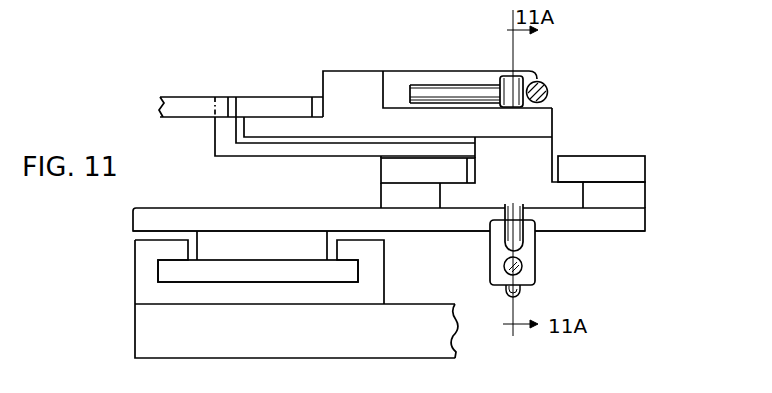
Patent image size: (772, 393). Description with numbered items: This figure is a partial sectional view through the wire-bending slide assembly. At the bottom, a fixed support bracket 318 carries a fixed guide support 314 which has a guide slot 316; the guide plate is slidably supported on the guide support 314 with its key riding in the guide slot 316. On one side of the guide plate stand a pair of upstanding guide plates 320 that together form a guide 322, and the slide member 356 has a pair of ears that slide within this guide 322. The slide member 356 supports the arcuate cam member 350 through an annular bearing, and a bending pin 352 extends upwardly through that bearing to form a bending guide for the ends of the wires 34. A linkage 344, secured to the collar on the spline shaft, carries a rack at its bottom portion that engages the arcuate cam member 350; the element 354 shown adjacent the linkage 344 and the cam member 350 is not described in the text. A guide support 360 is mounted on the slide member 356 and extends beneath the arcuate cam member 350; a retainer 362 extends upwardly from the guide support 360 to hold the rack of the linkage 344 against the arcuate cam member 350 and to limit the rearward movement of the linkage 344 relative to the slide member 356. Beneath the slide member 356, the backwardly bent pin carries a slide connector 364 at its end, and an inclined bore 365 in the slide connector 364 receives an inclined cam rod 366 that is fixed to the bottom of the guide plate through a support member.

The wires 34 is at (448, 91).
The linkage 344 is at (175, 107).
The arcuate cam member 350 is at (360, 82).
The bending pin 352 is at (538, 76).
The piston rod 354 is at (416, 81).
The slide member 356 is at (560, 188).
The guide support 360 is at (355, 152).
The retainer 362 is at (223, 105).
The guide support 314 is at (147, 293).
The guide slot 316 is at (157, 272).
The support bracket 318 is at (157, 337).
The upstanding guide plates 320 is at (610, 173).
The guide 322 is at (440, 193).
The slide connector 364 is at (527, 247).
The inclined bore 365 is at (523, 265).
The inclined cam rod 366 is at (523, 291).